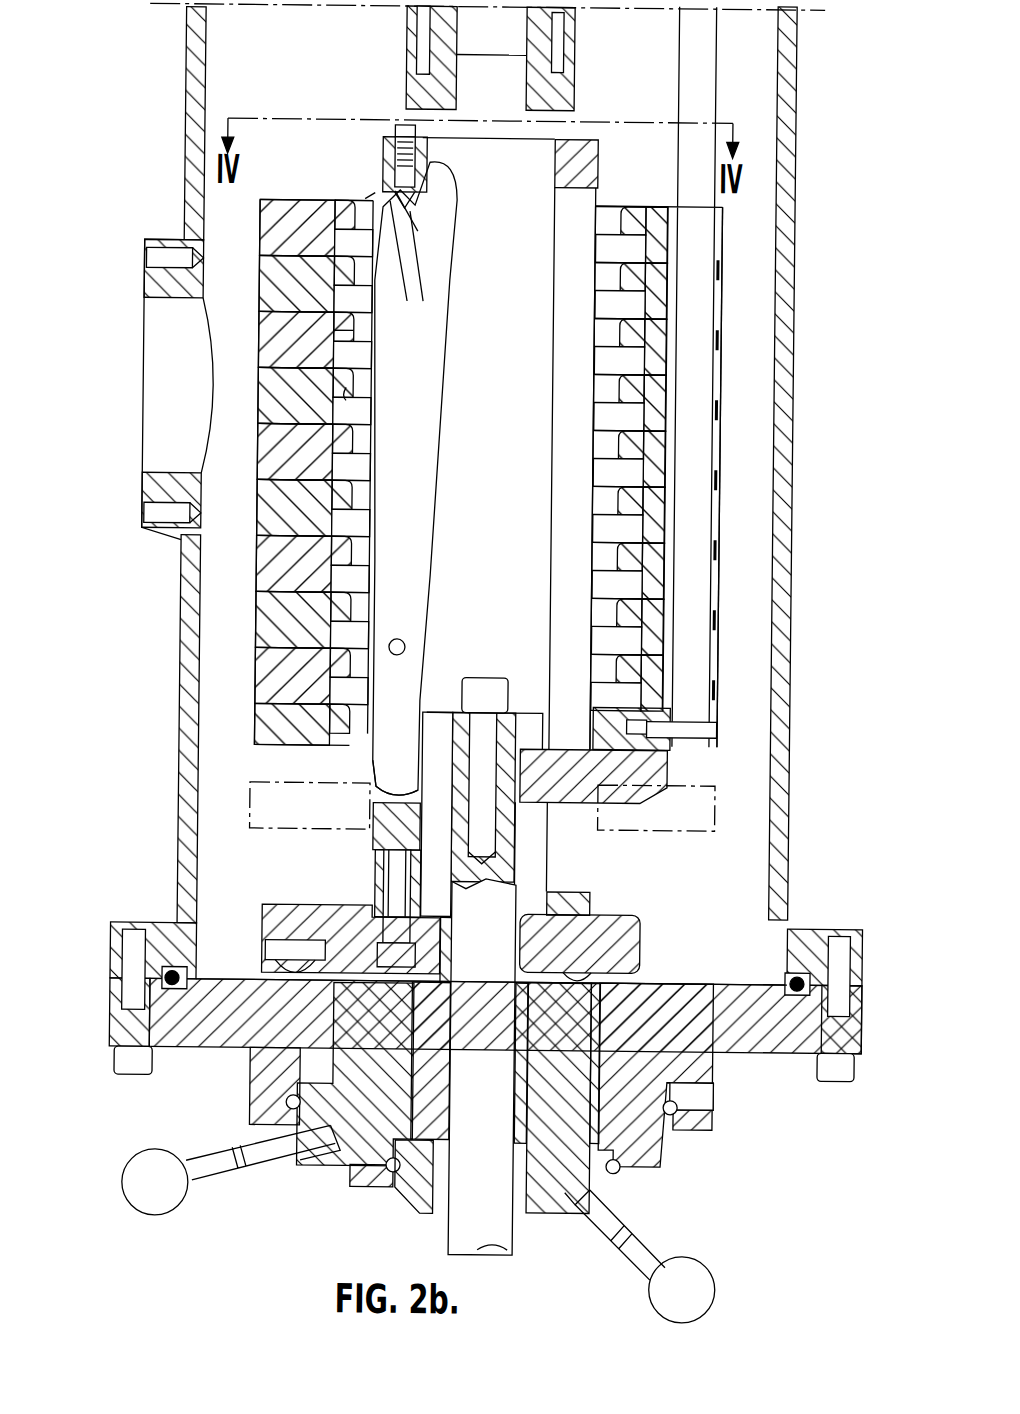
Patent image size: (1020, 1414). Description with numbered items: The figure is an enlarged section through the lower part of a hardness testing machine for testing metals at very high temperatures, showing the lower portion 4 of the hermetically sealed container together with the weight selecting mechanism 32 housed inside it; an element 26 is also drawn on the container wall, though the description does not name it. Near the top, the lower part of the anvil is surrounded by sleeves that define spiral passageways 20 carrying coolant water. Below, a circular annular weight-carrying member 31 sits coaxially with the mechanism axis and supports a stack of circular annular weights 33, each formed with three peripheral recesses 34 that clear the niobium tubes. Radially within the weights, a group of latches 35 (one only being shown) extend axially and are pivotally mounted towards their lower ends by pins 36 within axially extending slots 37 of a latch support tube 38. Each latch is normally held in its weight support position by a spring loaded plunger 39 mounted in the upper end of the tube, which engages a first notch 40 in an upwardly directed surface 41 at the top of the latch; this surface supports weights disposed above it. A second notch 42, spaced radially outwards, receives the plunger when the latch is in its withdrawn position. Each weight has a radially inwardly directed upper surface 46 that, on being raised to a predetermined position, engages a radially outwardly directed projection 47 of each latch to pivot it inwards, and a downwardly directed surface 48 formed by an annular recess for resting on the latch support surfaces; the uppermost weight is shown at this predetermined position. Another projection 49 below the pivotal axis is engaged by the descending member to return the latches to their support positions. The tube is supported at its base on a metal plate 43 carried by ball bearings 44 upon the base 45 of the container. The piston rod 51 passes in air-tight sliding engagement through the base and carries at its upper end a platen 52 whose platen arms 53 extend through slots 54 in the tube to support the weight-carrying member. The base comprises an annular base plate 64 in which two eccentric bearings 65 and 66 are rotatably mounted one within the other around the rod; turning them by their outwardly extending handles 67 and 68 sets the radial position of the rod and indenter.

The lower portion 4 is at (786, 85).
The spiral passageways 20 is at (568, 47).
The boss 26 is at (180, 413).
The weight-carrying member 31 is at (253, 789).
The weight selecting mechanism 32 is at (273, 199).
The weights 33 is at (262, 503).
The peripheral recesses 34 is at (719, 227).
The latches 35 is at (433, 448).
The pins 36 is at (406, 642).
The slots 37 is at (458, 823).
The latch support tube 38 is at (525, 240).
The spring loaded plunger 39 is at (420, 232).
The first notch 40 is at (428, 266).
The upwardly directed surface 41 is at (369, 202).
The second notch 42 is at (394, 196).
The metal plate 43 is at (607, 904).
The ball bearings 44 is at (295, 971).
The base 45 is at (273, 1030).
The radially inwardly directed upper surface 46 is at (342, 205).
The radially outwardly directed projection 47 is at (390, 254).
The downwardly directed surface 48 is at (352, 342).
The projection 49 is at (388, 783).
The piston rod 51 is at (496, 1037).
The platen 52 is at (549, 786).
The platen arms 53 is at (663, 769).
The slots 54 is at (585, 628).
The annular base plate 64 is at (690, 1000).
The eccentric bearing 65 is at (564, 1143).
The eccentric bearing 66 is at (372, 1122).
The handle 67 is at (708, 1270).
The handle 68 is at (137, 1168).